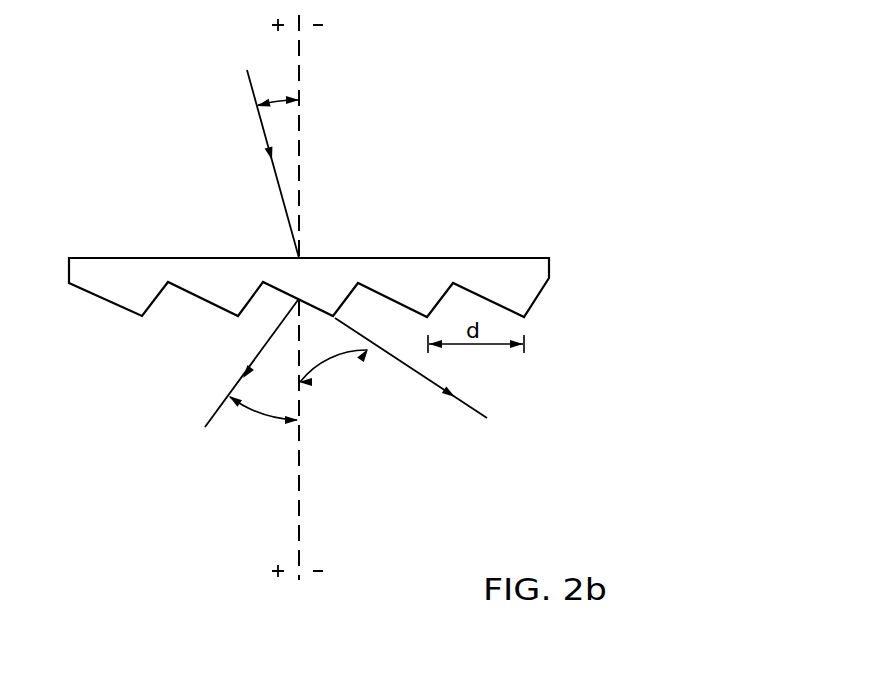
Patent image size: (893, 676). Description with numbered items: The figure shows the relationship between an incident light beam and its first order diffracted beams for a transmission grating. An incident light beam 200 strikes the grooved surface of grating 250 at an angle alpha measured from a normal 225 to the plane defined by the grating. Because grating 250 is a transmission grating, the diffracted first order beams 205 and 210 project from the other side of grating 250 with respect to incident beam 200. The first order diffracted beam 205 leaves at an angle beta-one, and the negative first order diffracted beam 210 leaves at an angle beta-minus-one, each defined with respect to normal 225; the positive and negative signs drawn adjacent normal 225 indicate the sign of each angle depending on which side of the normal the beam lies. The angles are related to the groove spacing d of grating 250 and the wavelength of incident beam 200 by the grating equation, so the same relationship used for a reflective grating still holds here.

The incident light beam 200 is at (246, 77).
The first order diffracted beam 205 is at (223, 402).
The negative first order diffracted beam 210 is at (475, 416).
The normal 225 is at (300, 50).
The transmission grating 250 is at (510, 266).